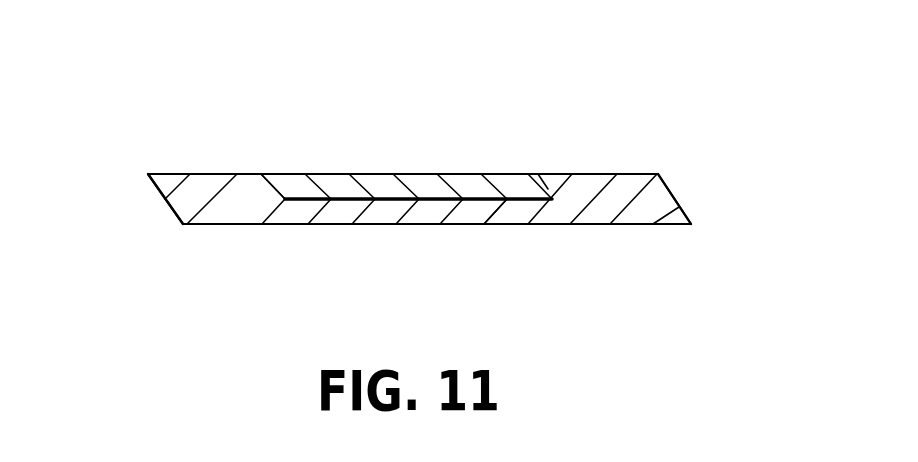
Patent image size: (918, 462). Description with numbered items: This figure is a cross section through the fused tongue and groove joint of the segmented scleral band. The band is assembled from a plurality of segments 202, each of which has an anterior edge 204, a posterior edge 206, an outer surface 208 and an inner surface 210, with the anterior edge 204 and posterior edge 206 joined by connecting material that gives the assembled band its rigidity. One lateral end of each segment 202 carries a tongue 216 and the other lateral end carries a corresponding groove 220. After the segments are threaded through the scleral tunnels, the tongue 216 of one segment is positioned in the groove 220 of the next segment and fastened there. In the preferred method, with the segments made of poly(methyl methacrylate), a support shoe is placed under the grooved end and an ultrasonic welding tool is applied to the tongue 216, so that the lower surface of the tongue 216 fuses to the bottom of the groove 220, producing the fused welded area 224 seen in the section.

The segment 202 is at (642, 101).
The anterior edge 204 is at (162, 196).
The posterior edge 206 is at (663, 177).
The outer surface 208 is at (220, 173).
The inner surface 210 is at (270, 225).
The tongue 216 is at (446, 199).
The groove 220 is at (286, 198).
The fused welded area 224 is at (502, 203).